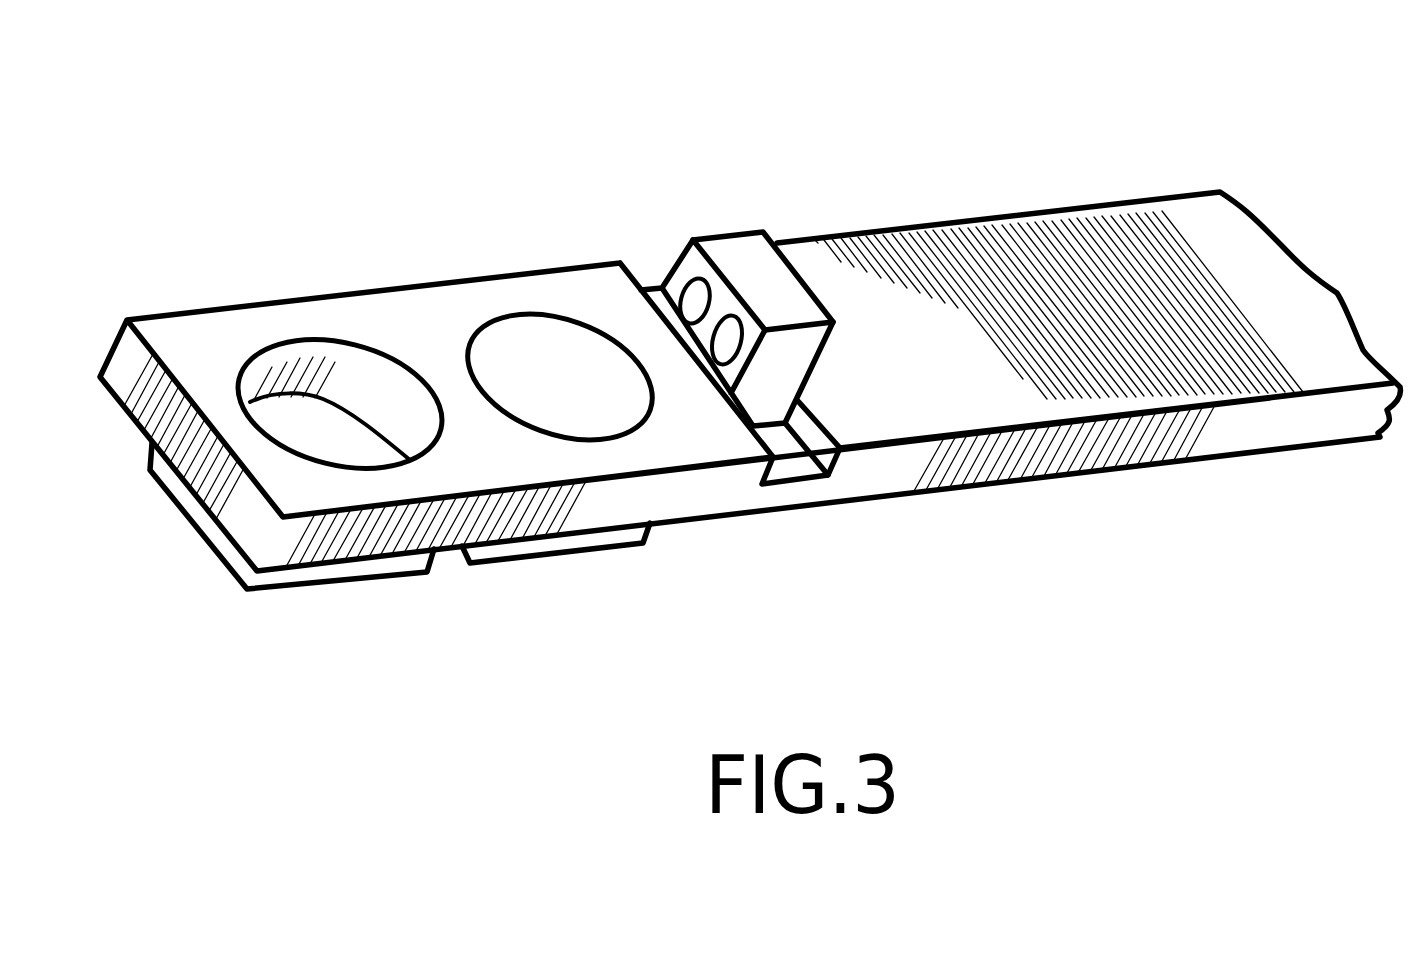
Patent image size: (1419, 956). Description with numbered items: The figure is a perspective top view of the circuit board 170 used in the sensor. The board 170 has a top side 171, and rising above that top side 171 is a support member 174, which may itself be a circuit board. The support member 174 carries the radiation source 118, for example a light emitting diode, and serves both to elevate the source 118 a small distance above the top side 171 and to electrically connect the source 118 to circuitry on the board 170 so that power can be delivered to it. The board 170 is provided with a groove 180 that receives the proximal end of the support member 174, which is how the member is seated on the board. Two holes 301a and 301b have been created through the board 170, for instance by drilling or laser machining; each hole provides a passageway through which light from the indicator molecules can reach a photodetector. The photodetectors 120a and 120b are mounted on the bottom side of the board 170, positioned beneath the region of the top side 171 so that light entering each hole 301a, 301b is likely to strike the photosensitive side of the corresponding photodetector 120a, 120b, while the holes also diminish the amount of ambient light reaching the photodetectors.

The circuit board 170 is at (1113, 443).
The top side of circuit board 171 is at (977, 260).
The support member 174 is at (745, 257).
The radiation source 118 is at (701, 268).
The groove 180 is at (786, 458).
The hole 301a is at (518, 337).
The hole 301b is at (317, 420).
The photodetector 120a is at (560, 546).
The photodetector 120b is at (332, 576).